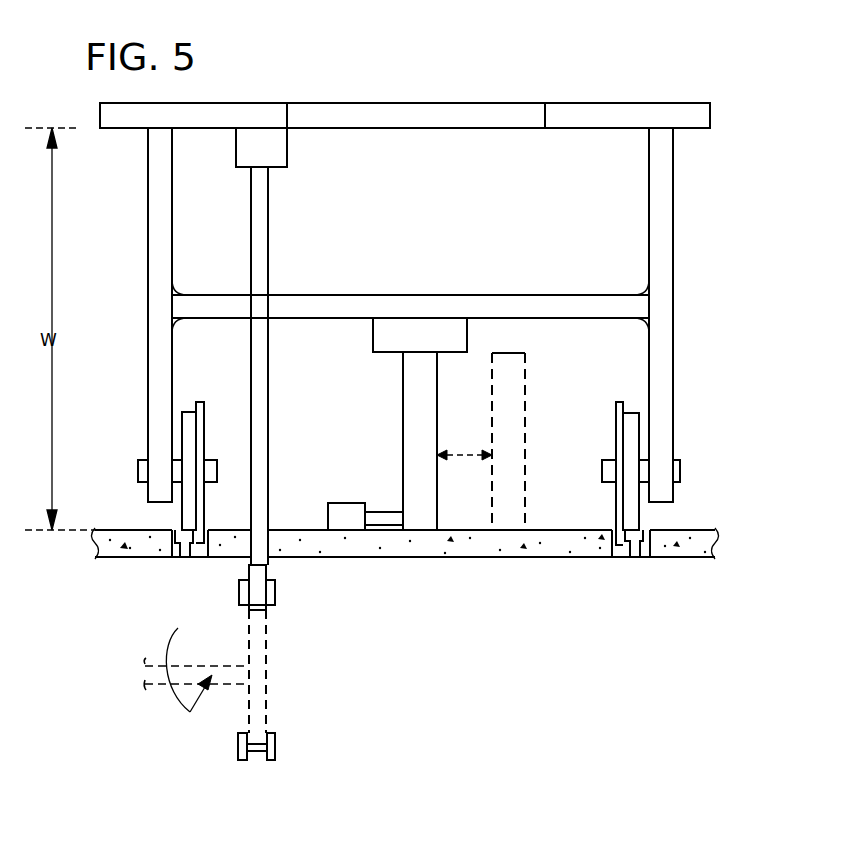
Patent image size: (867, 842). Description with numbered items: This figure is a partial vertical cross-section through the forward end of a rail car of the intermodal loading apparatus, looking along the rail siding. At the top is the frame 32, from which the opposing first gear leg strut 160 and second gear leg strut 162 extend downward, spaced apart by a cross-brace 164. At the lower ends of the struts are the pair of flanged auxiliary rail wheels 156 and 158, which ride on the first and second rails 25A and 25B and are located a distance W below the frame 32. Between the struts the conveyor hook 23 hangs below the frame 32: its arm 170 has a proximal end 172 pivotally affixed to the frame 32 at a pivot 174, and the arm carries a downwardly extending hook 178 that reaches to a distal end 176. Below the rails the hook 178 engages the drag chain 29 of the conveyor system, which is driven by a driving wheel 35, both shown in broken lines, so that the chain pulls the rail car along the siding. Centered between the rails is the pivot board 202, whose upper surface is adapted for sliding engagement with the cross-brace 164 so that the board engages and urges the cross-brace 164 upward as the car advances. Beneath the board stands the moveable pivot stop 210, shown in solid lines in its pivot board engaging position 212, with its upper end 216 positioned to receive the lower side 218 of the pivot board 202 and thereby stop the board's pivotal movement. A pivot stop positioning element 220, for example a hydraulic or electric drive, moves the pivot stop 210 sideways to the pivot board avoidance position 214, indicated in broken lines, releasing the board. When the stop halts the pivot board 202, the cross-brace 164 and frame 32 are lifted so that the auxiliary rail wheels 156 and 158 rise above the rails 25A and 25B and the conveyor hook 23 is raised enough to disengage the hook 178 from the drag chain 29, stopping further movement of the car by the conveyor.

The frame 32 is at (450, 128).
The first gear leg strut 160 is at (148, 180).
The second gear leg strut 162 is at (673, 178).
The pivot 174 is at (287, 150).
The proximal end 172 is at (268, 178).
The cross-brace 164 is at (405, 295).
The pivot board 202 is at (373, 333).
The lower side 218 is at (388, 352).
The moveable pivot stop 210 is at (417, 464).
The pivot board engaging position 212 is at (403, 430).
The pivot stop positioning element 220 is at (377, 517).
The upper end 216 is at (418, 352).
The pivot board avoidance position 214 is at (525, 370).
The flanged auxiliary rail wheel 156 is at (190, 422).
The flanged auxiliary rail wheel 158 is at (633, 420).
The first rail 25A is at (183, 537).
The second rail 25B is at (635, 540).
The arm 170 is at (260, 510).
The hook 178 is at (262, 590).
The distal end 176 is at (258, 603).
The conveyor hook 23 is at (360, 572).
The driving wheel 35 is at (267, 675).
The drag chain 29 is at (275, 748).